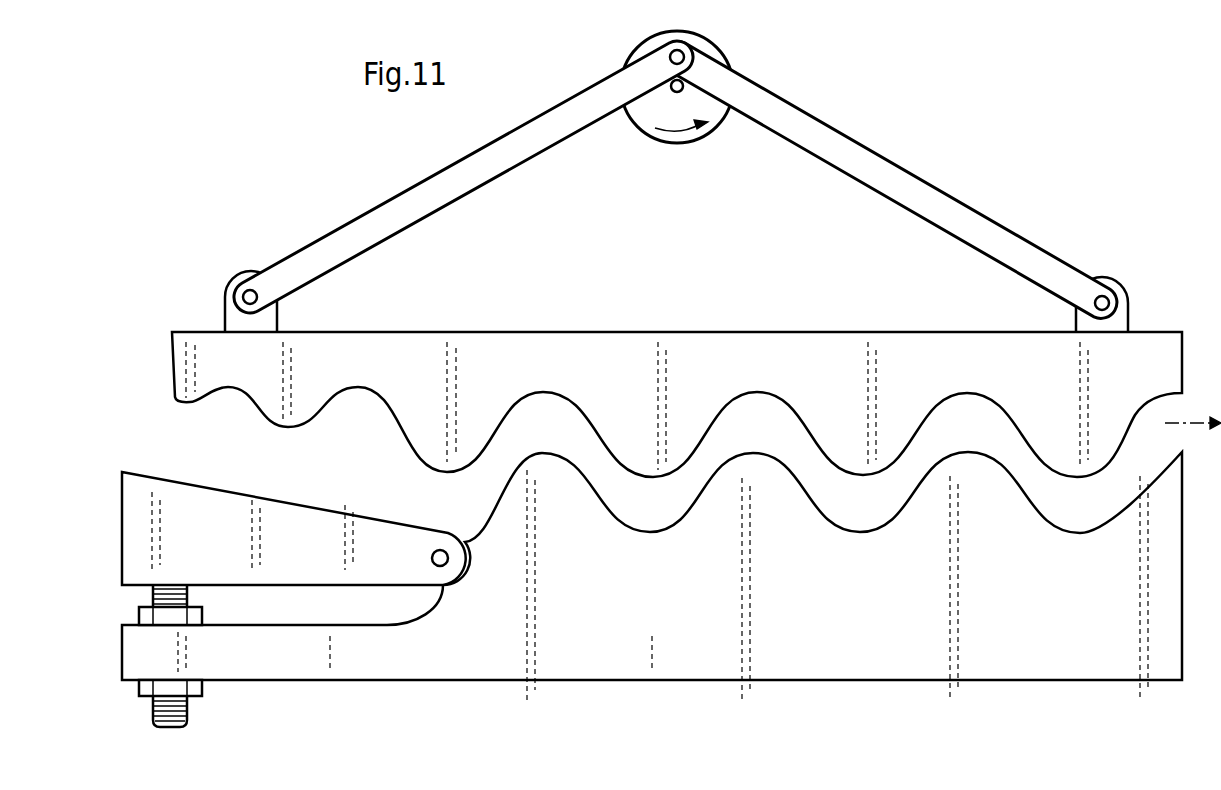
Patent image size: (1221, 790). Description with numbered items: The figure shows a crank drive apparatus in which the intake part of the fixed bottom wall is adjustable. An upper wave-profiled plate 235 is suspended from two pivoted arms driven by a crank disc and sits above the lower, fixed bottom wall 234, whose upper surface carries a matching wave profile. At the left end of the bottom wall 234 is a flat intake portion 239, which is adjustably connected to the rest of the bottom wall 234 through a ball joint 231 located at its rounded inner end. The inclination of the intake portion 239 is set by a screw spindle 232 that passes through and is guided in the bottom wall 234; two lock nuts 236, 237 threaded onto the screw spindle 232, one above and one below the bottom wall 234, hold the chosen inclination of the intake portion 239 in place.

The upper wave-profile plate 235 is at (625, 352).
The bottom wall 234 is at (693, 663).
The intake portion 239 is at (242, 491).
The ball joint 231 is at (466, 565).
The lock nut 237 is at (199, 615).
The lock nut 236 is at (196, 681).
The screw spindle 232 is at (190, 714).